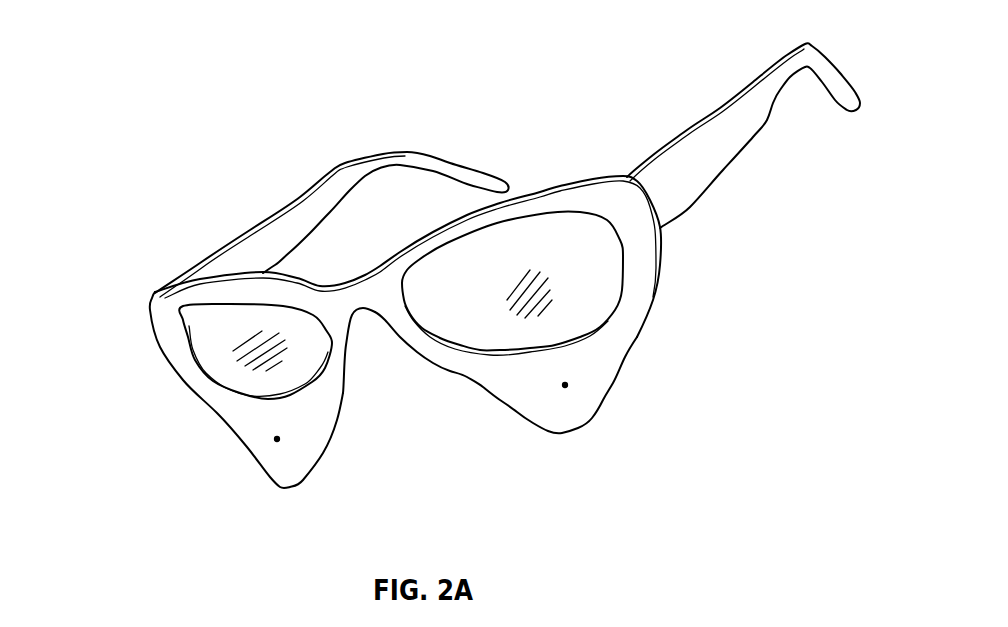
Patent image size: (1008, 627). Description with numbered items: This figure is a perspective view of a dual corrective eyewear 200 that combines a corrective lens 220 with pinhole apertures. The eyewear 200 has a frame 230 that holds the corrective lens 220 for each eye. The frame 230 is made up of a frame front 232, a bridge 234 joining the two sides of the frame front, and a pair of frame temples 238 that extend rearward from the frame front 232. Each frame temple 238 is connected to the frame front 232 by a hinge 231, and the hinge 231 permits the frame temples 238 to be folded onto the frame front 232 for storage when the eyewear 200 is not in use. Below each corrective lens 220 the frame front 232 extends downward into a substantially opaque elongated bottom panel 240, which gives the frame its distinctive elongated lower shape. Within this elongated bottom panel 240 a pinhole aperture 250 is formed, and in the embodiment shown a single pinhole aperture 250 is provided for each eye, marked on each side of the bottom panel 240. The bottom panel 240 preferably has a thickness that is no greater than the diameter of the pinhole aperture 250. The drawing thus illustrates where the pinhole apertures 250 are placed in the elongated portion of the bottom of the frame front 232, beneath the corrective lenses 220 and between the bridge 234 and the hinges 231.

The dual corrective eyewear 200 is at (208, 114).
The frame 230 is at (447, 332).
The hinge 231 is at (170, 284).
The frame temples 238 is at (742, 88).
The corrective lens 220 is at (202, 330).
The frame front 232 is at (193, 367).
The bridge 234 is at (363, 313).
The elongated bottom panel 240 is at (617, 377).
The pinhole aperture 250 is at (277, 439).